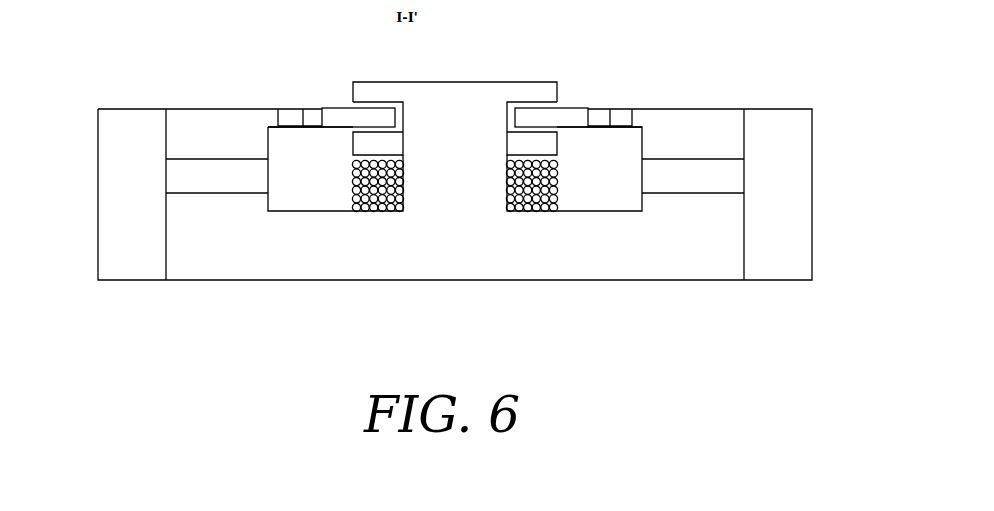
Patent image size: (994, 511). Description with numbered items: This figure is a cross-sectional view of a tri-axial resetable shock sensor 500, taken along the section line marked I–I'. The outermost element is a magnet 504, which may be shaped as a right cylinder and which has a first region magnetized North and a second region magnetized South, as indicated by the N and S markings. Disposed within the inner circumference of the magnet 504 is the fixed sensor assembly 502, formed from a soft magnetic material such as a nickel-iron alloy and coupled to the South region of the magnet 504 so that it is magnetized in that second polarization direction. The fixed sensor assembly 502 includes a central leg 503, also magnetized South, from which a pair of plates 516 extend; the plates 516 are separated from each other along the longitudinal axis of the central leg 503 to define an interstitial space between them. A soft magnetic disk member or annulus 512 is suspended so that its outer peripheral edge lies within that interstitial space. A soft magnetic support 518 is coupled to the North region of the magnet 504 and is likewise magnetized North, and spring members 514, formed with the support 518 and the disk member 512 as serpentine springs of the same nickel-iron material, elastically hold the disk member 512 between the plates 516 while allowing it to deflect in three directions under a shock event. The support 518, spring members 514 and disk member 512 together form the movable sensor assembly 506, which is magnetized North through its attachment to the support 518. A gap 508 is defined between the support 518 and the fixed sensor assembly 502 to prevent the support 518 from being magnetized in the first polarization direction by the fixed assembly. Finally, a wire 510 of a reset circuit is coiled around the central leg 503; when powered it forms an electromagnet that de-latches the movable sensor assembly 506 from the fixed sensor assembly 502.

The sensor 500 is at (66, 52).
The fixed sensor assembly 502 is at (365, 273).
The central leg 503 is at (437, 123).
The magnet 504 is at (108, 187).
The movable sensor assembly 506 is at (322, 91).
The gap 508 is at (253, 170).
The wire 510 is at (350, 207).
The disk member or annulus 512 is at (347, 108).
The spring members 514 is at (300, 118).
The pair of plates 516 is at (528, 88).
The support 518 is at (207, 108).